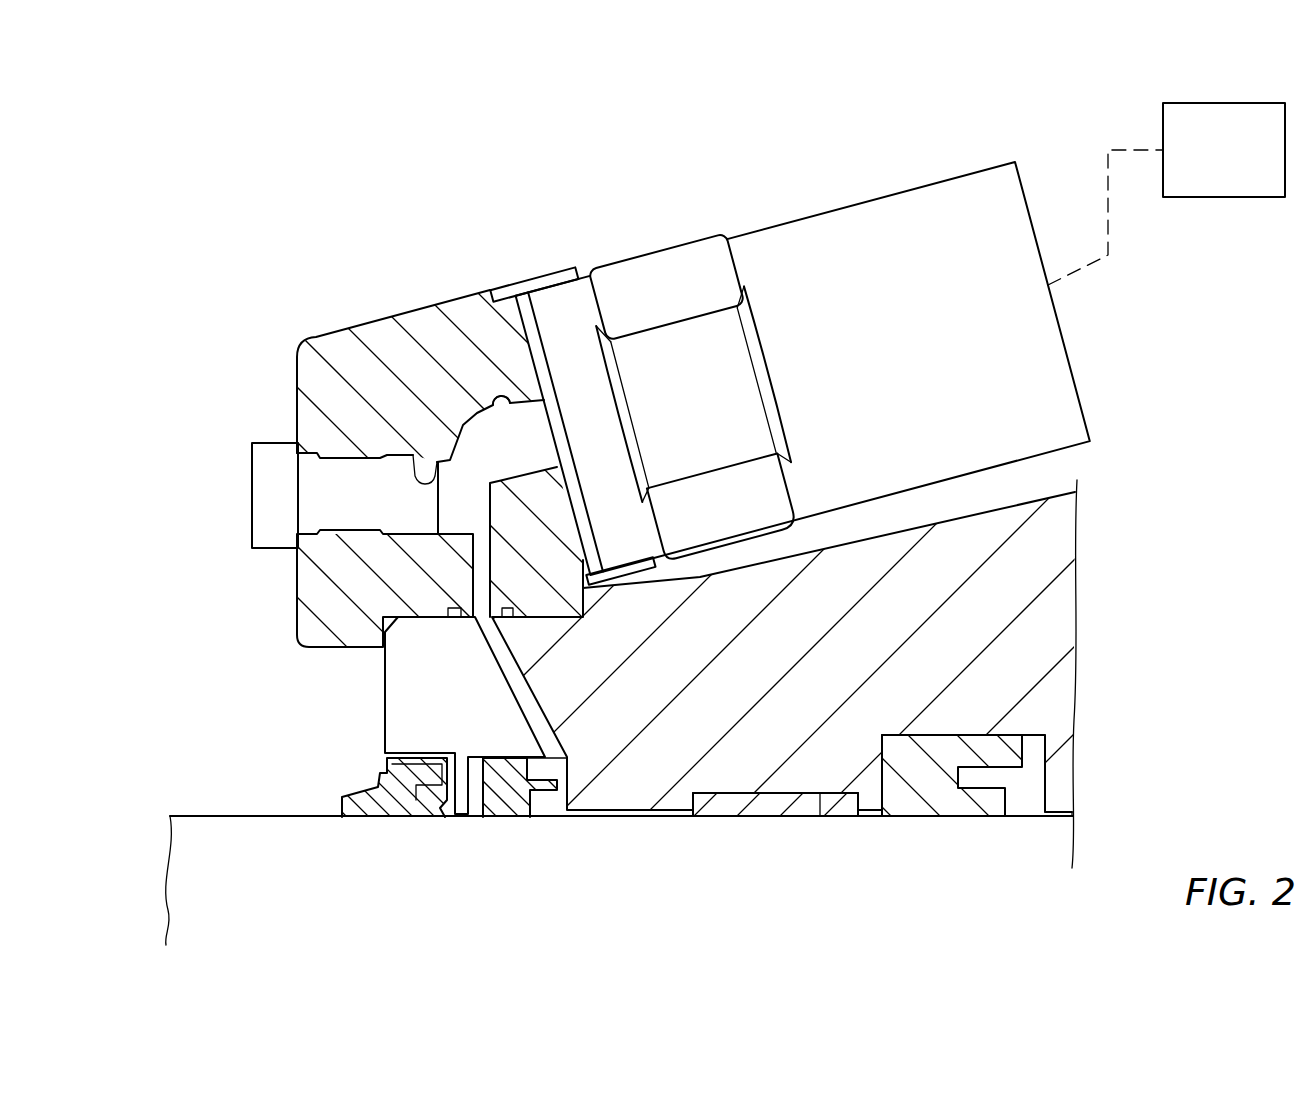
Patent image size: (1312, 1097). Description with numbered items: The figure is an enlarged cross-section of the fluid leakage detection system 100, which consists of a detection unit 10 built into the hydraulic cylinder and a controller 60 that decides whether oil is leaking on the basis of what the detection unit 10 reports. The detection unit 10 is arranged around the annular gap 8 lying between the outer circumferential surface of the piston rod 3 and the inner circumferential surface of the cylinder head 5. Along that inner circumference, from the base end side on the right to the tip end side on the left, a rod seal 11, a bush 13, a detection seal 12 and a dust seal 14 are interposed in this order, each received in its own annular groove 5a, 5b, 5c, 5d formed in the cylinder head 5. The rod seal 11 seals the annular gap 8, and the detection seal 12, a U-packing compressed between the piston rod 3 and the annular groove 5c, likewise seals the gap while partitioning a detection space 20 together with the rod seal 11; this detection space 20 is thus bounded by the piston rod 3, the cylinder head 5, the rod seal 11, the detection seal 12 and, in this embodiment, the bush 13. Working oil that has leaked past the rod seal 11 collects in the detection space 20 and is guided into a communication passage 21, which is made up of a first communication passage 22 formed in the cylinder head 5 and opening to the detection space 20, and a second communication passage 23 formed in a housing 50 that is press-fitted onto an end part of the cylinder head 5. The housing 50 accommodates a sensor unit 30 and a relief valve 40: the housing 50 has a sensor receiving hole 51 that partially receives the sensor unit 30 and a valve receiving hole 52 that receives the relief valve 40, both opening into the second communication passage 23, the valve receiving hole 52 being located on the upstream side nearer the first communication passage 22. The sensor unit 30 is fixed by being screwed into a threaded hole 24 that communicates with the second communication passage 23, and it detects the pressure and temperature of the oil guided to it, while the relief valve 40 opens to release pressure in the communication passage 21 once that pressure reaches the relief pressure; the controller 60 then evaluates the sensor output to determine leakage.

The fluid leakage detection system 100 is at (788, 113).
The detection unit 10 is at (298, 222).
The piston rod 3 is at (178, 893).
The cylinder head 5 is at (1057, 627).
The annular groove 5a is at (1034, 740).
The annular groove 5b is at (822, 797).
The annular groove 5c is at (533, 817).
The annular groove 5d is at (435, 817).
The annular gap 8 is at (1062, 801).
The rod seal 11 is at (952, 805).
The detection seal 12 is at (503, 817).
The bush 13 is at (790, 803).
The dust seal 14 is at (397, 817).
The detection space 20 is at (566, 820).
The communication passage 21 is at (112, 562).
The first communication passage 22 is at (513, 688).
The second communication passage 23 is at (480, 558).
The threaded hole 24 is at (493, 406).
The sensor unit 30 is at (625, 253).
The relief valve 40 is at (340, 495).
The housing 50 is at (347, 402).
The sensor receiving hole 51 is at (526, 290).
The valve receiving hole 52 is at (413, 455).
The controller 60 is at (1235, 103).